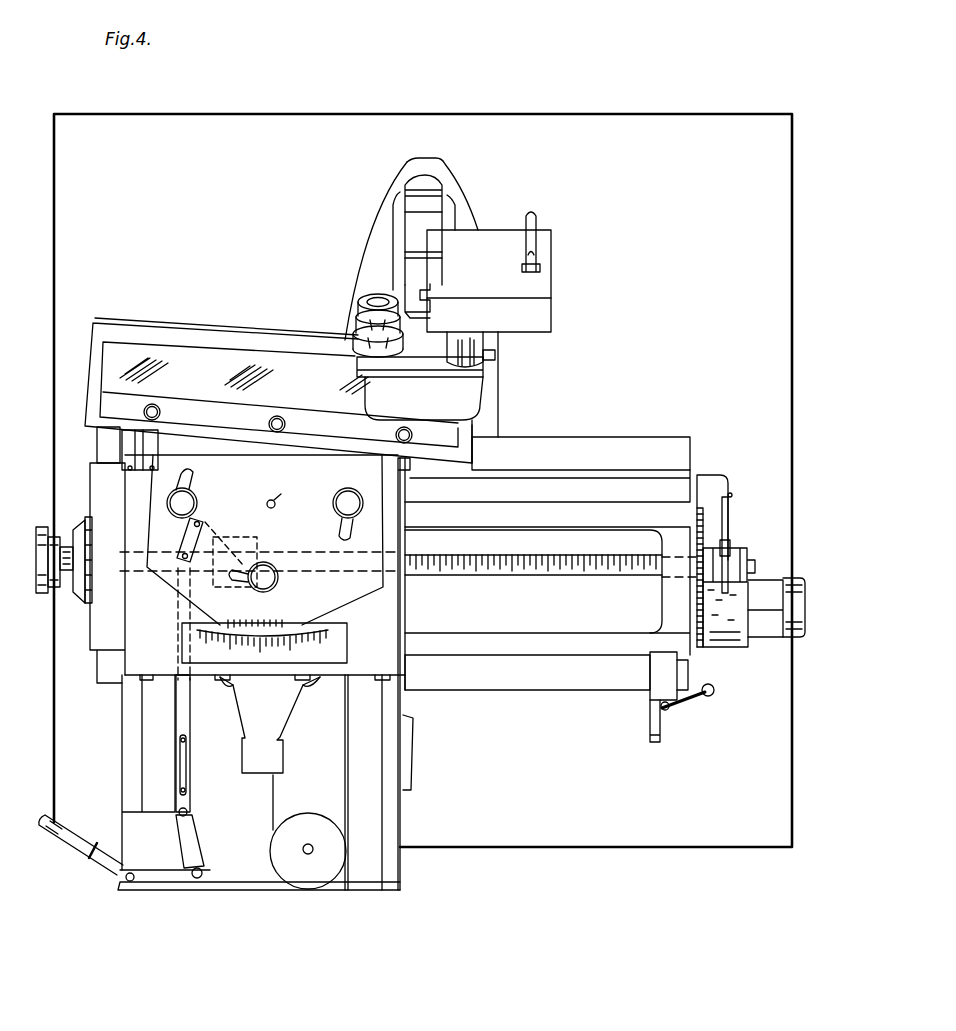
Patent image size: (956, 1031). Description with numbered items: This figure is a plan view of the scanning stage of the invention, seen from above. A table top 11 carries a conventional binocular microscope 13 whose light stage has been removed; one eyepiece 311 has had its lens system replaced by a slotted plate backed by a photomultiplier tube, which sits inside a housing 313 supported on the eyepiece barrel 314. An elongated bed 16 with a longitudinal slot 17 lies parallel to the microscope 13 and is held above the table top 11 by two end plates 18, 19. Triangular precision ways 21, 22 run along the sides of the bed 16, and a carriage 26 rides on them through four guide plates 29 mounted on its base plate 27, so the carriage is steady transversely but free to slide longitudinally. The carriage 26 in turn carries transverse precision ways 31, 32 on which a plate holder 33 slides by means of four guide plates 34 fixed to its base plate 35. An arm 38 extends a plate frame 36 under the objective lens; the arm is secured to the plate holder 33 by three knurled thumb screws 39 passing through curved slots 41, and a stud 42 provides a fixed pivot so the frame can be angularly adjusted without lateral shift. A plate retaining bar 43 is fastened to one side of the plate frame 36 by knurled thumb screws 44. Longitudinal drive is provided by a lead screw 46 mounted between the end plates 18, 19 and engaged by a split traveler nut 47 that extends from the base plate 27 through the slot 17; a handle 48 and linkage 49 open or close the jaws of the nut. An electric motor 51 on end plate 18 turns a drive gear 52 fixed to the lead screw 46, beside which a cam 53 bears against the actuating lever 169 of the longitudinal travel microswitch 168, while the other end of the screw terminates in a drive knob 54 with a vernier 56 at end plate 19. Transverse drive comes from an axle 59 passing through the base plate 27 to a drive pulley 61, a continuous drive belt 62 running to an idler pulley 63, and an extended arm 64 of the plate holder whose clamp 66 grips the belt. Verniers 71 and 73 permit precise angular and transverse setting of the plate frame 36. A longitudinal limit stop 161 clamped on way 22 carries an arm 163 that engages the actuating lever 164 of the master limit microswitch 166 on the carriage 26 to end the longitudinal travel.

The table top 11 is at (640, 846).
The binocular microscope 13 is at (344, 273).
The housing 313 is at (553, 284).
The eyepiece 311 is at (495, 354).
The eyepiece barrel 314 is at (470, 352).
The plate frame 36 is at (108, 326).
The plate retaining bar 43 is at (305, 423).
The knurled thumb screws 44 is at (276, 417).
The precision way 21 is at (575, 445).
The longitudinal slot 17 is at (572, 632).
The lead screw 46 is at (580, 575).
The plate holder 33 is at (418, 592).
The base plate of the plate holder 35 is at (405, 612).
The elongated bed 16 is at (530, 657).
The precision way 22 is at (575, 683).
The longitudinal limit stop 161 is at (655, 695).
The arm 163 is at (655, 745).
The longitudinal travel microswitch 168 is at (722, 482).
The drive gear 52 is at (698, 522).
The actuating lever 169 is at (728, 520).
The cam 53 is at (730, 560).
The electric motor 51 is at (770, 650).
The end plate 18 is at (697, 647).
The guide plates 29 is at (117, 450).
The guide plates 34 is at (145, 475).
The end plate 19 is at (92, 655).
The vernier 73 is at (110, 612).
The vernier 56 is at (78, 525).
The drive knob 54 is at (58, 590).
The arm 38 is at (185, 588).
The split traveler nut 47 is at (250, 537).
The knurled thumb screws 39 is at (190, 500).
The curved slots 41 is at (190, 480).
The stud 42 is at (282, 493).
The vernier 71 is at (268, 616).
The carriage 26 is at (122, 751).
The precision way 32 is at (130, 776).
The linkage 49 is at (190, 712).
The handle 48 is at (84, 860).
The base plate of the carriage 27 is at (235, 882).
The extended arm 64 is at (249, 758).
The idler pulley 63 is at (300, 688).
The clamp 66 is at (262, 773).
The continuous drive belt 62 is at (342, 772).
The drive pulley 61 is at (312, 880).
The axle 59 is at (303, 850).
The precision way 31 is at (400, 805).
The actuating lever 164 is at (415, 735).
The longitudinal master limit microswitch 166 is at (410, 772).